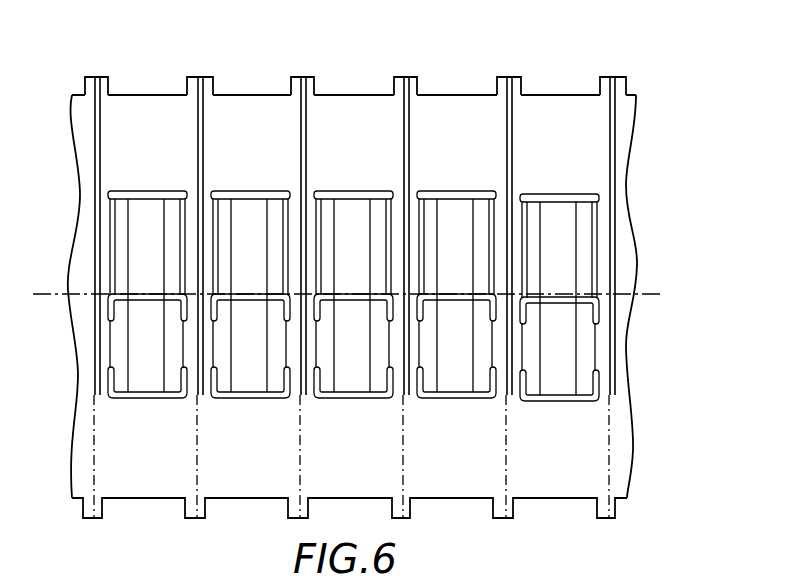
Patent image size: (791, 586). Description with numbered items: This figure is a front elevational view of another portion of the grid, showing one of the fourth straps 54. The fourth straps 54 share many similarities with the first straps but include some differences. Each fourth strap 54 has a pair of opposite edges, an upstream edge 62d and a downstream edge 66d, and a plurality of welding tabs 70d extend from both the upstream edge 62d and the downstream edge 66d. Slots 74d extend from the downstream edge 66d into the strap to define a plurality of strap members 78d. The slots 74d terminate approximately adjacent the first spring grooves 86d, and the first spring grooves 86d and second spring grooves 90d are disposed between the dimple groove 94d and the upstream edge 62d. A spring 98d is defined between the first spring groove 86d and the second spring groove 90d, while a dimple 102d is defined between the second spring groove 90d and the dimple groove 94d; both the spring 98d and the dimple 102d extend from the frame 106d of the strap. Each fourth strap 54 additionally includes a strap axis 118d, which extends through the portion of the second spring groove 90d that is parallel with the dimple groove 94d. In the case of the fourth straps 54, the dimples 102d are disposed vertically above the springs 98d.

The fourth strap 54 is at (323, 275).
The upstream edge 62d is at (148, 498).
The downstream edge 66d is at (125, 94).
The welding tab 70d is at (85, 78).
The slot 74d is at (97, 77).
The strap member 78d is at (150, 93).
The first spring groove 86d is at (572, 403).
The second spring groove 90d is at (546, 293).
The dimple groove 94d is at (558, 303).
The spring 98d is at (548, 401).
The dimple 102d is at (549, 192).
The frame 106d is at (566, 93).
The strap axis 118d is at (72, 294).